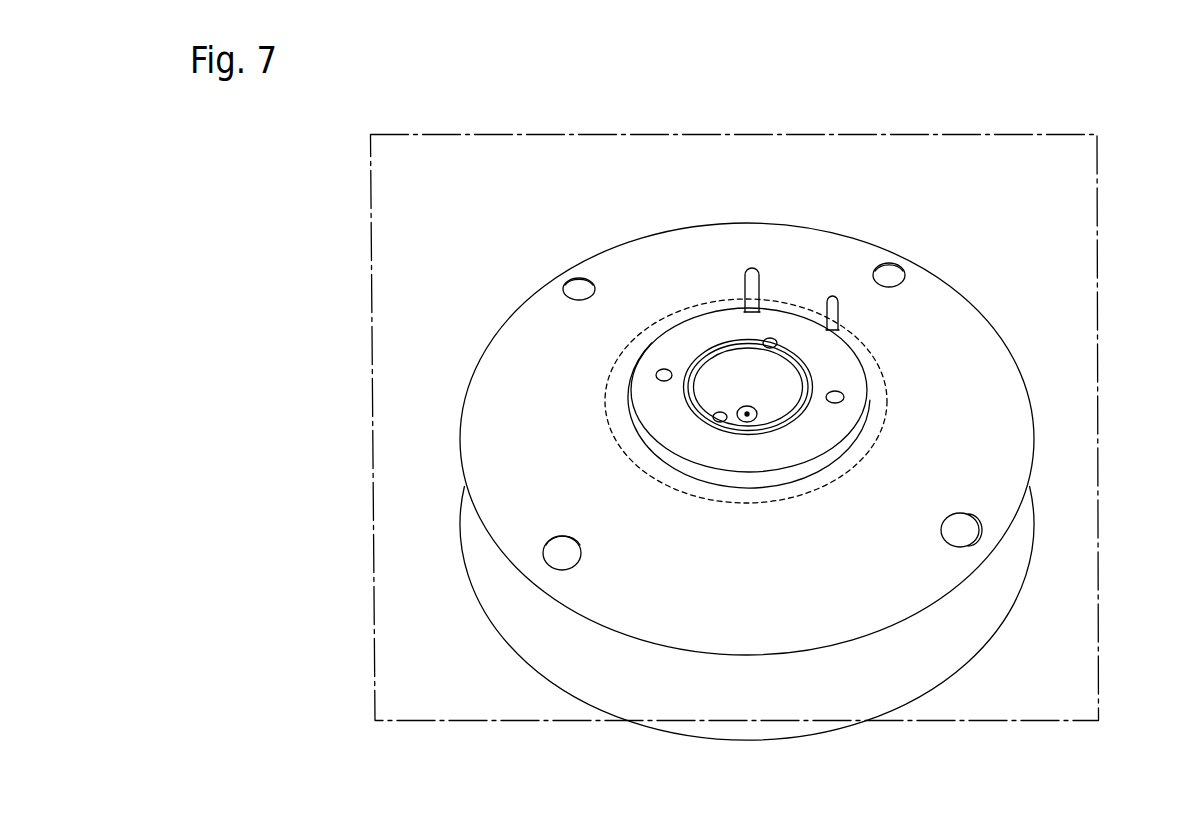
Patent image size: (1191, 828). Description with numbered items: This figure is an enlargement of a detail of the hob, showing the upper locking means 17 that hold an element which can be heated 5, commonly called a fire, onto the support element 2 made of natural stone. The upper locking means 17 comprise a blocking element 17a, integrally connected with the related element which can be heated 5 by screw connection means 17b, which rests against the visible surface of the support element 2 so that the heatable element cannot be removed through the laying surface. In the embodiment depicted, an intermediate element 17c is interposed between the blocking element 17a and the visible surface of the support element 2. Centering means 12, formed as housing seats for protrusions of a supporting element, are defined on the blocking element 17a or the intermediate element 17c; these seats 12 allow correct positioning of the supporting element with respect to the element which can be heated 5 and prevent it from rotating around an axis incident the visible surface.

The support element 2 is at (977, 217).
The element which can be heated 5 is at (782, 387).
The centering means 12 is at (574, 540).
The upper locking means 17 is at (517, 412).
The blocking element 17a is at (745, 448).
The screw connection means 17b is at (661, 370).
The intermediate element 17c is at (522, 340).